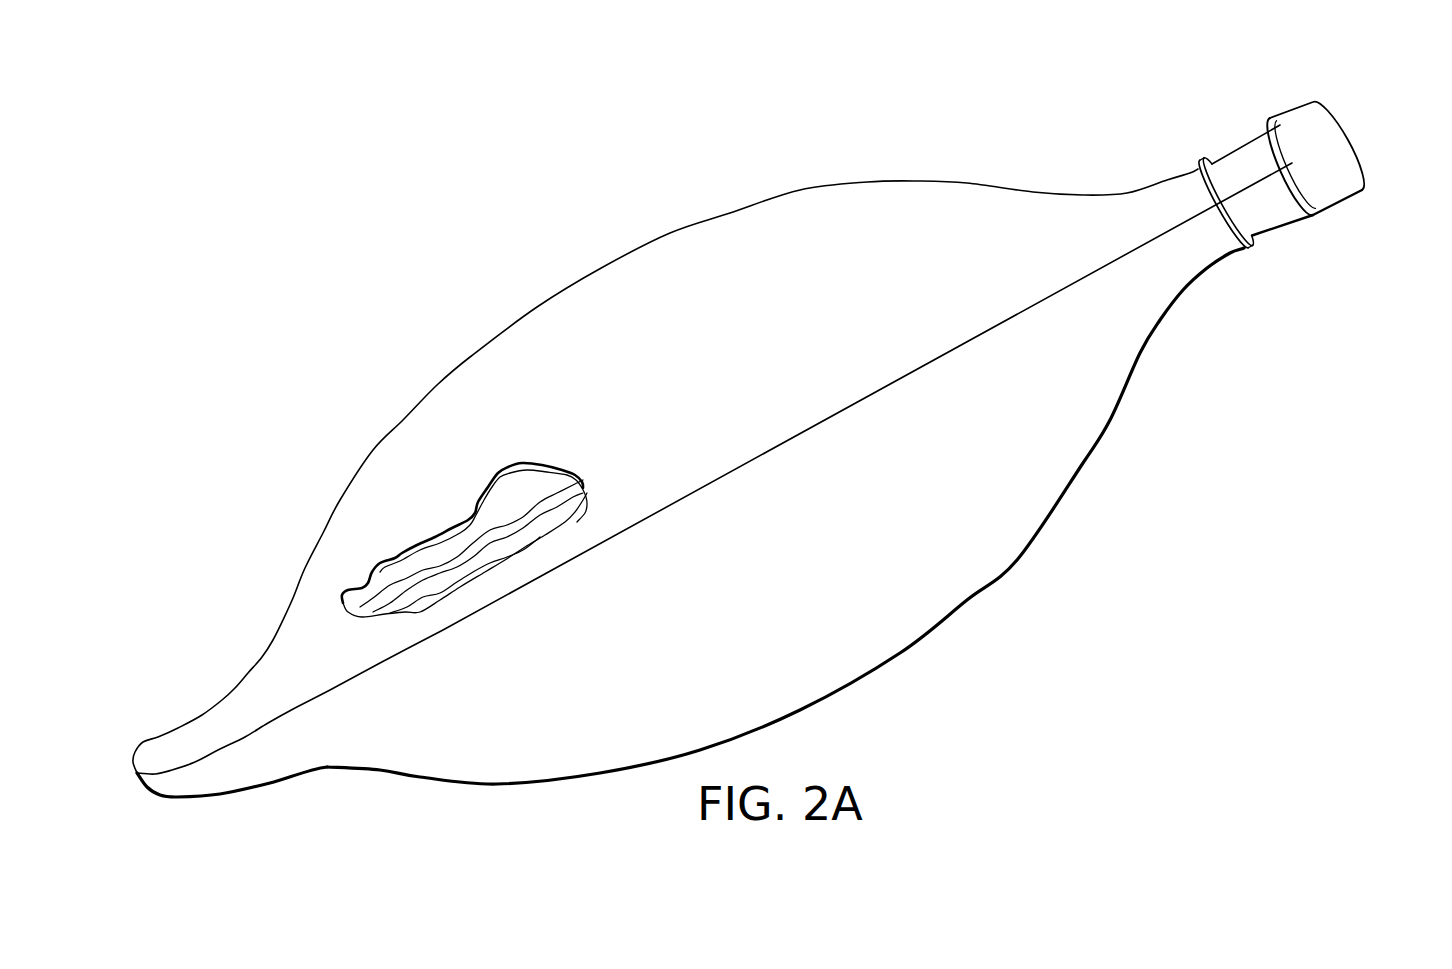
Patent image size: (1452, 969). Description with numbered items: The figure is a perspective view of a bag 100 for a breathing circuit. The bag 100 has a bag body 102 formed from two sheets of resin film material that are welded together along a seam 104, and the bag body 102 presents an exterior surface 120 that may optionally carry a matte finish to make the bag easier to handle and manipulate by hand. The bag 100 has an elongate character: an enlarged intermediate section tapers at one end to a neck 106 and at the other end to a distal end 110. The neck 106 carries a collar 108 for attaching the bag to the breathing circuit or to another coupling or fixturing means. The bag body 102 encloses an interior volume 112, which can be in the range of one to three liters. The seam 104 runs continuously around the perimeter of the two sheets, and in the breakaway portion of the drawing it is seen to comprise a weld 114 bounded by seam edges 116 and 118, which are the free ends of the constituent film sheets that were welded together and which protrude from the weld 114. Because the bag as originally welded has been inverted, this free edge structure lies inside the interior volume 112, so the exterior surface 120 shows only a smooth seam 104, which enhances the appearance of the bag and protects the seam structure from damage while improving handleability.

The bag 100 is at (783, 444).
The bag body 102 is at (872, 192).
The seam 104 is at (780, 447).
The neck 106 is at (1316, 146).
The collar 108 is at (1353, 164).
The distal end 110 is at (177, 800).
The interior volume 112 is at (438, 487).
The weld 114 is at (570, 490).
The seam edge 116 is at (432, 574).
The seam edge 118 is at (462, 567).
The exterior surface 120 is at (712, 455).